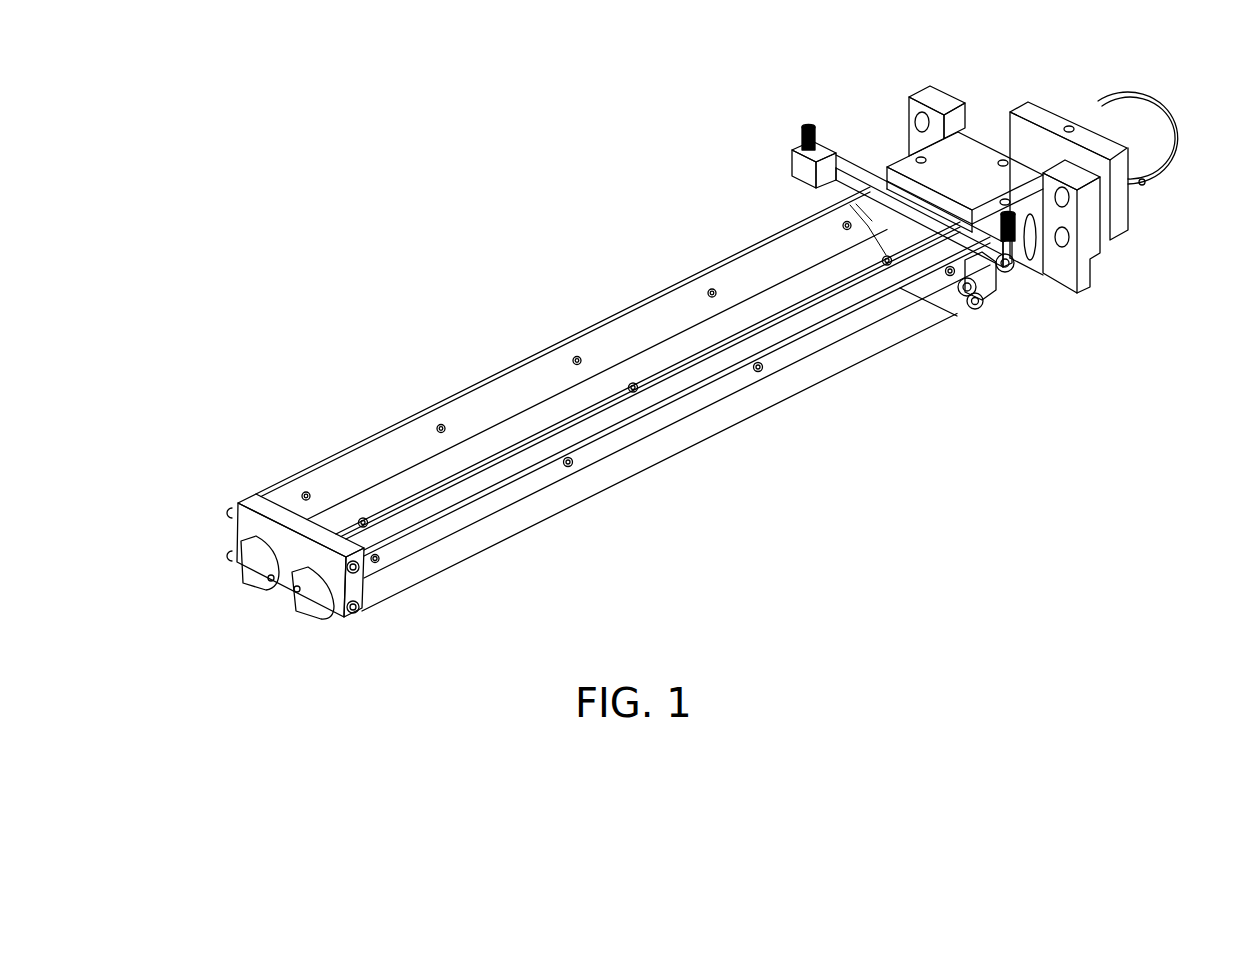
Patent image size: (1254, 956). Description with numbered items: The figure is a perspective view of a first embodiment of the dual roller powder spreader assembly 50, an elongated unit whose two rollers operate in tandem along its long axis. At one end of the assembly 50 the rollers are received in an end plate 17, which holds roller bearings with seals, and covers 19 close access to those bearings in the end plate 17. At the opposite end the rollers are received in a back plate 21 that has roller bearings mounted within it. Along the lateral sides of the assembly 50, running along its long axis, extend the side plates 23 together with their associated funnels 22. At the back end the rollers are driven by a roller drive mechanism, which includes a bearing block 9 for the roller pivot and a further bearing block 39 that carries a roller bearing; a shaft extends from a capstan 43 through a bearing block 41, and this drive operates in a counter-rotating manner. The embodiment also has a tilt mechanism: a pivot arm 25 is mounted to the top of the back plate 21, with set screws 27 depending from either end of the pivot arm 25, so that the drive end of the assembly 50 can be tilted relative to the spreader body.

The bearing block 9 is at (940, 177).
The end plate 17 is at (256, 527).
The covers 19 is at (252, 570).
The back plate 21 is at (858, 211).
The funnels 22 is at (523, 387).
The side plates 23 is at (490, 527).
The pivot arm 25 is at (824, 152).
The set screws 27 is at (806, 126).
The bearing block 39 is at (942, 92).
The bearing block 41 is at (1032, 110).
The capstan 43 is at (1117, 116).
The dual roller powder spreader assembly 50 is at (566, 232).